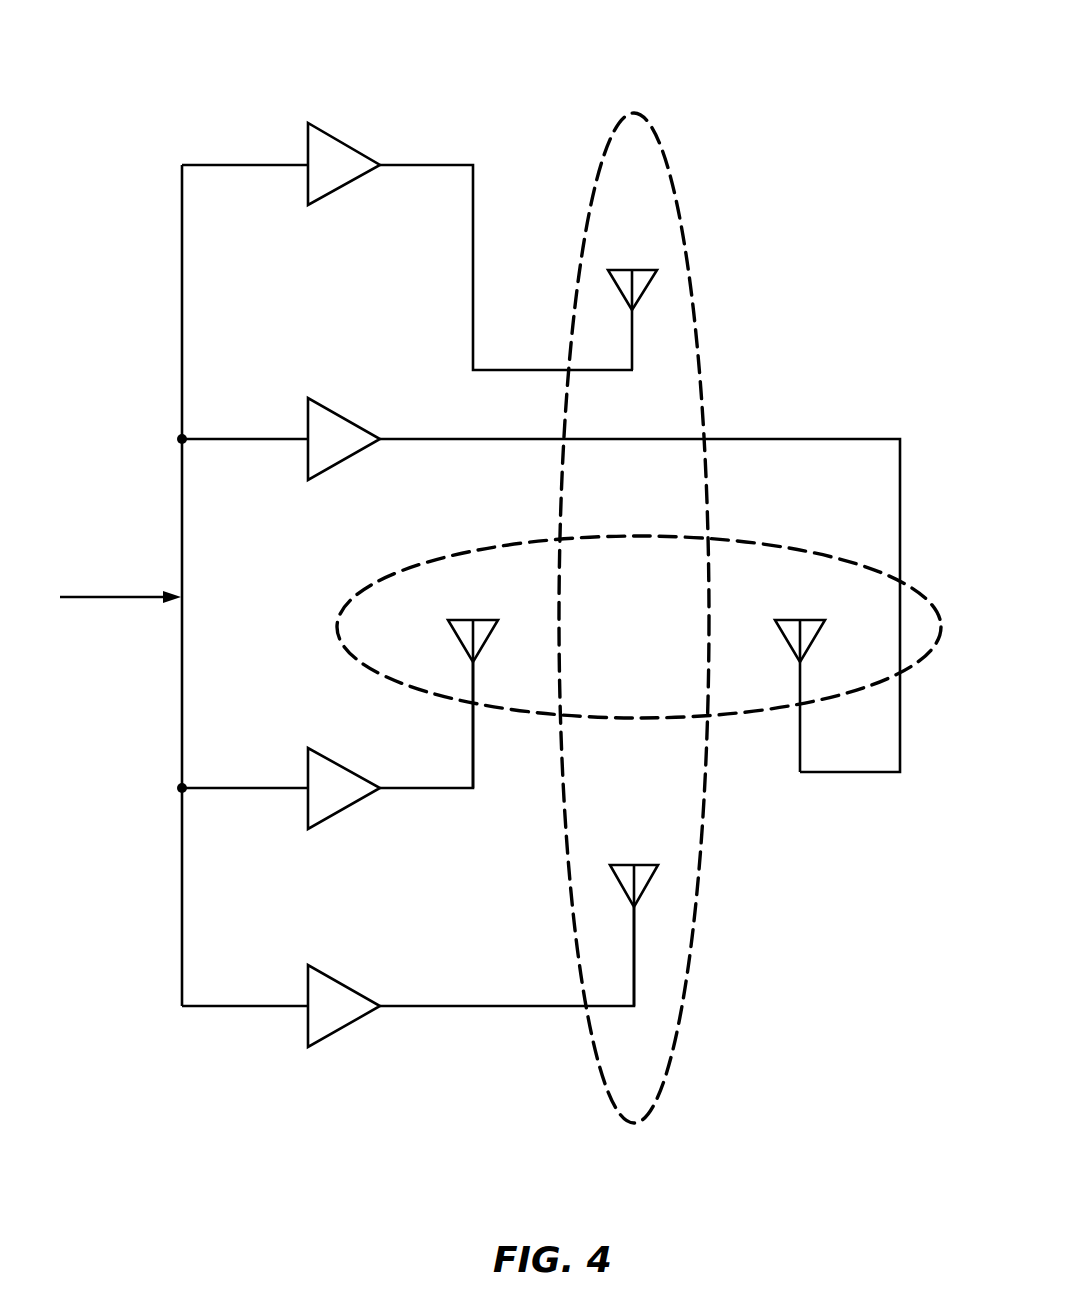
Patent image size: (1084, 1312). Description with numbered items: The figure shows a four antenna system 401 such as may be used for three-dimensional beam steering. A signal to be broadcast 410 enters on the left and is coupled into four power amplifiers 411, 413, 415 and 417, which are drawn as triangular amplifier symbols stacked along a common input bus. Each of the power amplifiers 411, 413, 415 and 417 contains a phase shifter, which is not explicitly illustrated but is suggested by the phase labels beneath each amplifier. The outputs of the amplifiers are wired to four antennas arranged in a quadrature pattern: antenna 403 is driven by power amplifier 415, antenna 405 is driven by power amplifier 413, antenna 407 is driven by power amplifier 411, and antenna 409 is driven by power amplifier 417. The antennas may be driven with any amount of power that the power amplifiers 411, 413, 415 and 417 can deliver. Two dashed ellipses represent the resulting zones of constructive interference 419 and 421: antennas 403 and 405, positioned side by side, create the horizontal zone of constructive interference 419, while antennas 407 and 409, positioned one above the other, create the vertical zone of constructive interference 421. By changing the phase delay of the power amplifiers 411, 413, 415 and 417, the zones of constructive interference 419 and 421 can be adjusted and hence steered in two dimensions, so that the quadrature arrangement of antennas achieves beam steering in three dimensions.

The four antenna system 401 is at (533, 509).
The antenna 403 is at (473, 620).
The antenna 405 is at (800, 620).
The antenna 407 is at (632, 270).
The antenna 409 is at (634, 865).
The signal to be broadcast 410 is at (122, 592).
The power amplifier 411 is at (340, 140).
The power amplifier 413 is at (340, 414).
The power amplifier 415 is at (340, 764).
The power amplifier 417 is at (340, 981).
The zone of constructive interference 419 is at (703, 367).
The zone of constructive interference 421 is at (770, 545).